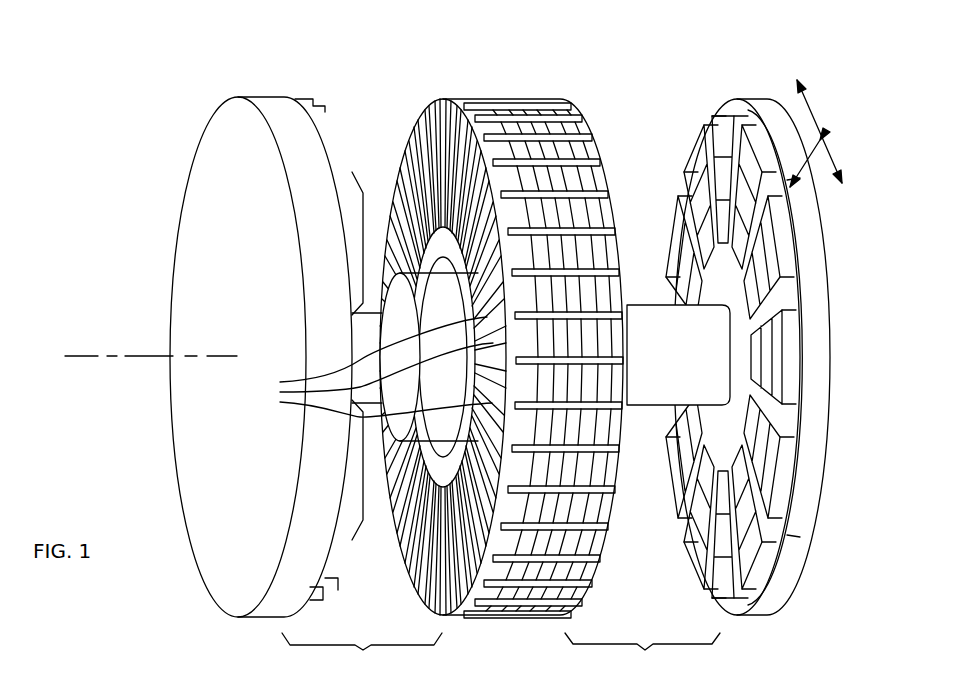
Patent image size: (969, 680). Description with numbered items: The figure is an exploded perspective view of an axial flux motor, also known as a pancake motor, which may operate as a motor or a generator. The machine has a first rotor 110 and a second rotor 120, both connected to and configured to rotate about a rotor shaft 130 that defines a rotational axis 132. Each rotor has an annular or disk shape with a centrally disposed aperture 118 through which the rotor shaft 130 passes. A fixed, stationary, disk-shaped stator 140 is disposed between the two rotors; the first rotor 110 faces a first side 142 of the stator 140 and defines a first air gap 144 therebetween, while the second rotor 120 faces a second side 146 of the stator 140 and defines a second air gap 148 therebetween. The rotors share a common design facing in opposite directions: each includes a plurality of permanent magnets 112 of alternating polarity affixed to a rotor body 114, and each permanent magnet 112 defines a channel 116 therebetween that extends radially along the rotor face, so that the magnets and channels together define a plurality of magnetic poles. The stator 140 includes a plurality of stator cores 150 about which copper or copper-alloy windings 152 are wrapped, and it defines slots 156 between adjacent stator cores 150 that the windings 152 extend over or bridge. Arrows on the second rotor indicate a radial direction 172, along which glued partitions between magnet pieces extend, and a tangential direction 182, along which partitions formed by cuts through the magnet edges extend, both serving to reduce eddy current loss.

The first rotor 110 is at (506, 315).
The permanent magnets 112 is at (337, 133).
The rotor body 114 is at (230, 163).
The channel 116 is at (357, 480).
The centrally disposed aperture 118 is at (708, 352).
The second rotor 120 is at (742, 103).
The rotor shaft 130 is at (635, 325).
The rotational axis 132 is at (110, 355).
The stator 140 is at (505, 318).
The first side 142 is at (440, 138).
The first air gap 144 is at (362, 655).
The second side 146 is at (536, 318).
The second air gap 148 is at (642, 655).
The stator cores 150 is at (370, 367).
The windings 152 is at (525, 103).
The slots 156 is at (578, 103).
The radial direction 172 is at (812, 162).
The tangential direction 182 is at (818, 118).